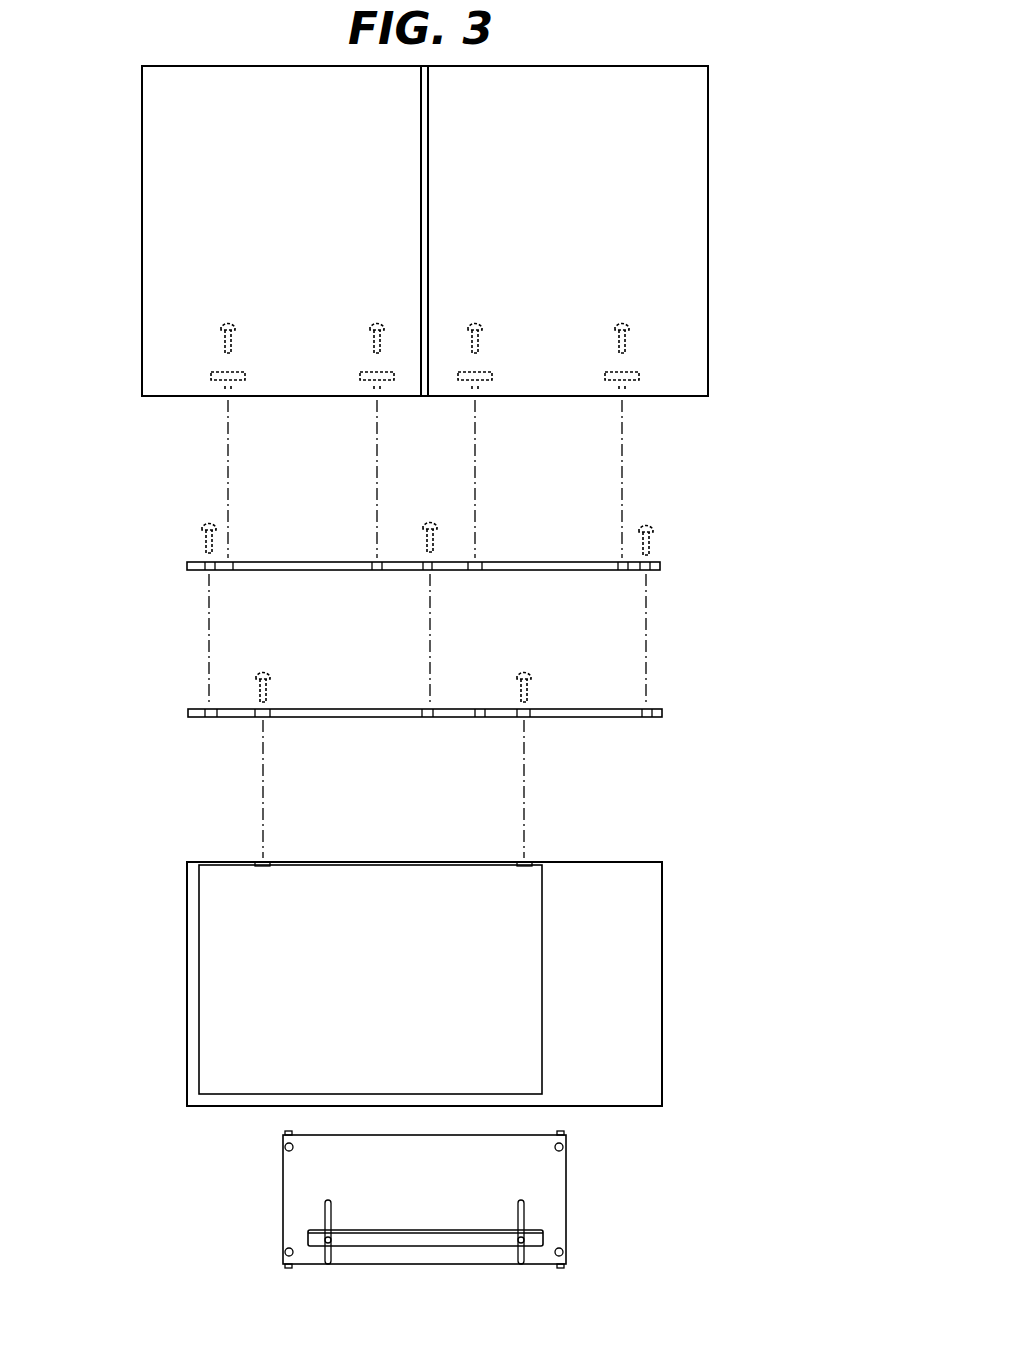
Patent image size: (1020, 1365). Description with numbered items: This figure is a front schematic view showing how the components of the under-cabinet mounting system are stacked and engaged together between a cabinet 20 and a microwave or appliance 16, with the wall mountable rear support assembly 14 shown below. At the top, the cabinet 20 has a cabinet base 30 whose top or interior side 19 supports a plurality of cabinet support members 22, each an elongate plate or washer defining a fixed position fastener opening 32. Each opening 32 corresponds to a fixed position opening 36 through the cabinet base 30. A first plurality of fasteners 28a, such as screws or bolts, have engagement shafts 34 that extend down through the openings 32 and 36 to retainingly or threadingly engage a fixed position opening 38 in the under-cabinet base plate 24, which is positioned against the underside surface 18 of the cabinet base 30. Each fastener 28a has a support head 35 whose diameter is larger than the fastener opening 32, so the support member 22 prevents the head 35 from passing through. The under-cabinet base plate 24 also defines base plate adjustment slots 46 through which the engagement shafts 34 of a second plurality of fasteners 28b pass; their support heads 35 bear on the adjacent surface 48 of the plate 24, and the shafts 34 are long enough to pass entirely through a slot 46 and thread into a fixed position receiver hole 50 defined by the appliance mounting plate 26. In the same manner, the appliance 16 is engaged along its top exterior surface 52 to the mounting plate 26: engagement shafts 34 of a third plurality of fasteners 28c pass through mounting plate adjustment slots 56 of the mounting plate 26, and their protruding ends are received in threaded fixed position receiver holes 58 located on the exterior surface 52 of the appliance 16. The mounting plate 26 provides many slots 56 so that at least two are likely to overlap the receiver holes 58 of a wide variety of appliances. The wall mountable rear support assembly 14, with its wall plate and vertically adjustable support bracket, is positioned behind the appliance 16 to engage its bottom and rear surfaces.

The wall mountable rear support assembly 14 is at (567, 1160).
The microwave or appliance 16 is at (663, 945).
The underside surface 18 is at (692, 412).
The top or interior side 19 is at (672, 385).
The cabinet 20 is at (708, 130).
The cabinet support member 22 is at (637, 378).
The under-cabinet base plate 24 is at (668, 566).
The appliance mounting plate 26 is at (670, 714).
The first plurality of fasteners 28a is at (480, 318).
The second plurality of fasteners 28b is at (440, 518).
The third plurality of fasteners 28c is at (528, 660).
The cabinet base 30 is at (178, 398).
The fastener opening 32 is at (238, 374).
The engagement shaft 34 is at (480, 348).
The support head 35 is at (377, 326).
The fixed position opening 36 is at (477, 382).
The fixed position opening 38 is at (478, 563).
The base plate adjustment slot 46 is at (428, 570).
The adjacent surface 48 is at (380, 708).
The fixed position opening or receiver hole 50 is at (432, 710).
The top exterior surface 52 is at (640, 862).
The mounting plate adjustment slot 56 is at (530, 717).
The receiver hole 58 is at (528, 860).